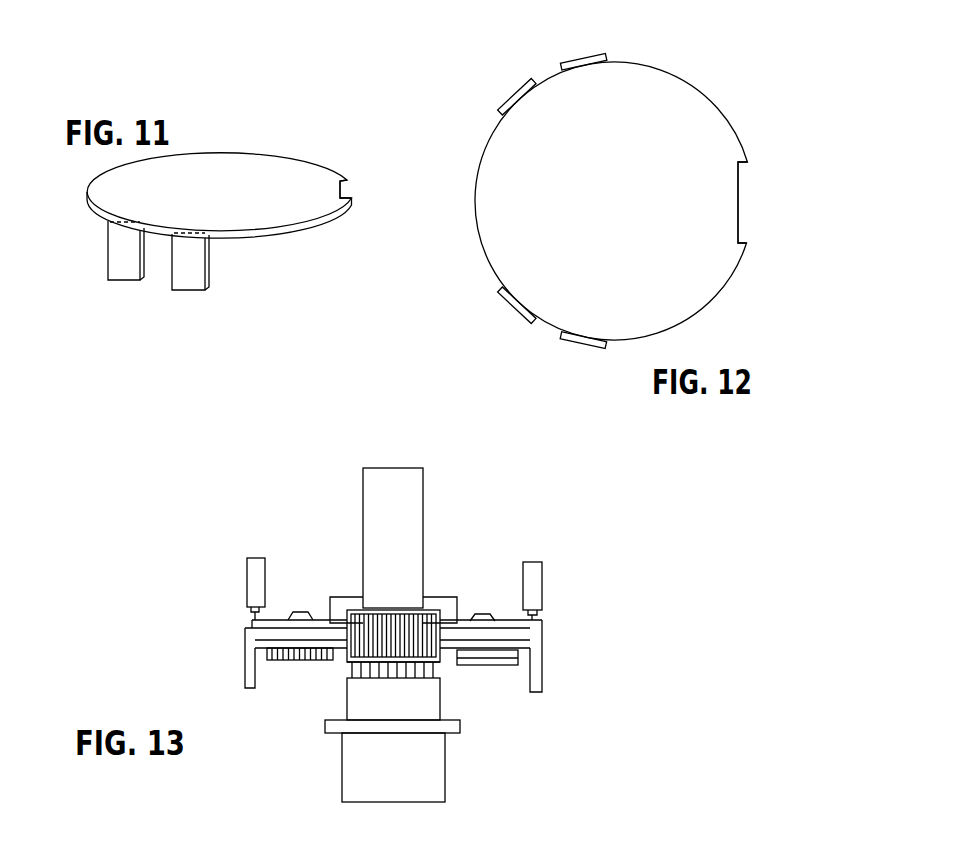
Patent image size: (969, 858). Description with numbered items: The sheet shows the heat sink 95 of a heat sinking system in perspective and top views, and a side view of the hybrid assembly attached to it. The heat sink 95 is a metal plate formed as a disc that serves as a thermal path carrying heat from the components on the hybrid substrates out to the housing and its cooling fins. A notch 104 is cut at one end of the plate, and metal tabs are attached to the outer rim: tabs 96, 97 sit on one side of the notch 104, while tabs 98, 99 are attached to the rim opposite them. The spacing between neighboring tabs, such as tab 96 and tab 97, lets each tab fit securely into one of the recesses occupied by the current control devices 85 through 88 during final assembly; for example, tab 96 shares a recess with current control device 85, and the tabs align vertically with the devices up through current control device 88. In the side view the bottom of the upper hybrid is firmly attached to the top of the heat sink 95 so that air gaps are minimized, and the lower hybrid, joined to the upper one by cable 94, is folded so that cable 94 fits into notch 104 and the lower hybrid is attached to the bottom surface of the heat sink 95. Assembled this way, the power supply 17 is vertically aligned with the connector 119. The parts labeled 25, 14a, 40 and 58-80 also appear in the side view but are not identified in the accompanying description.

In FIG. 11, the heat sink 95 is at (222, 201).
In FIG. 12, the heat sink 95 is at (625, 190).
In FIG. 11, the metal tab 96 is at (197, 266).
In FIG. 12, the metal tab 96 is at (580, 346).
In FIG. 11, the metal tab 97 is at (132, 258).
In FIG. 12, the metal tab 97 is at (520, 313).
In FIG. 12, the metal tab 98 is at (513, 92).
In FIG. 12, the metal tab 99 is at (597, 52).
In FIG. 11, the notch 104 is at (345, 189).
In FIG. 12, the notch 104 is at (741, 200).
In FIG. 13, the power supply 17 is at (405, 522).
In FIG. 13, the flange 25 is at (443, 597).
In FIG. 13, the support pad 14a is at (297, 612).
In FIG. 13, the current control device 85 is at (256, 558).
In FIG. 13, the current control device 88 is at (542, 583).
In FIG. 13, the cable 94 is at (440, 652).
In FIG. 13, the comb element 40 is at (308, 661).
In FIG. 13, the sensor assembly 58-80 is at (500, 666).
In FIG. 13, the connector 119 is at (403, 774).